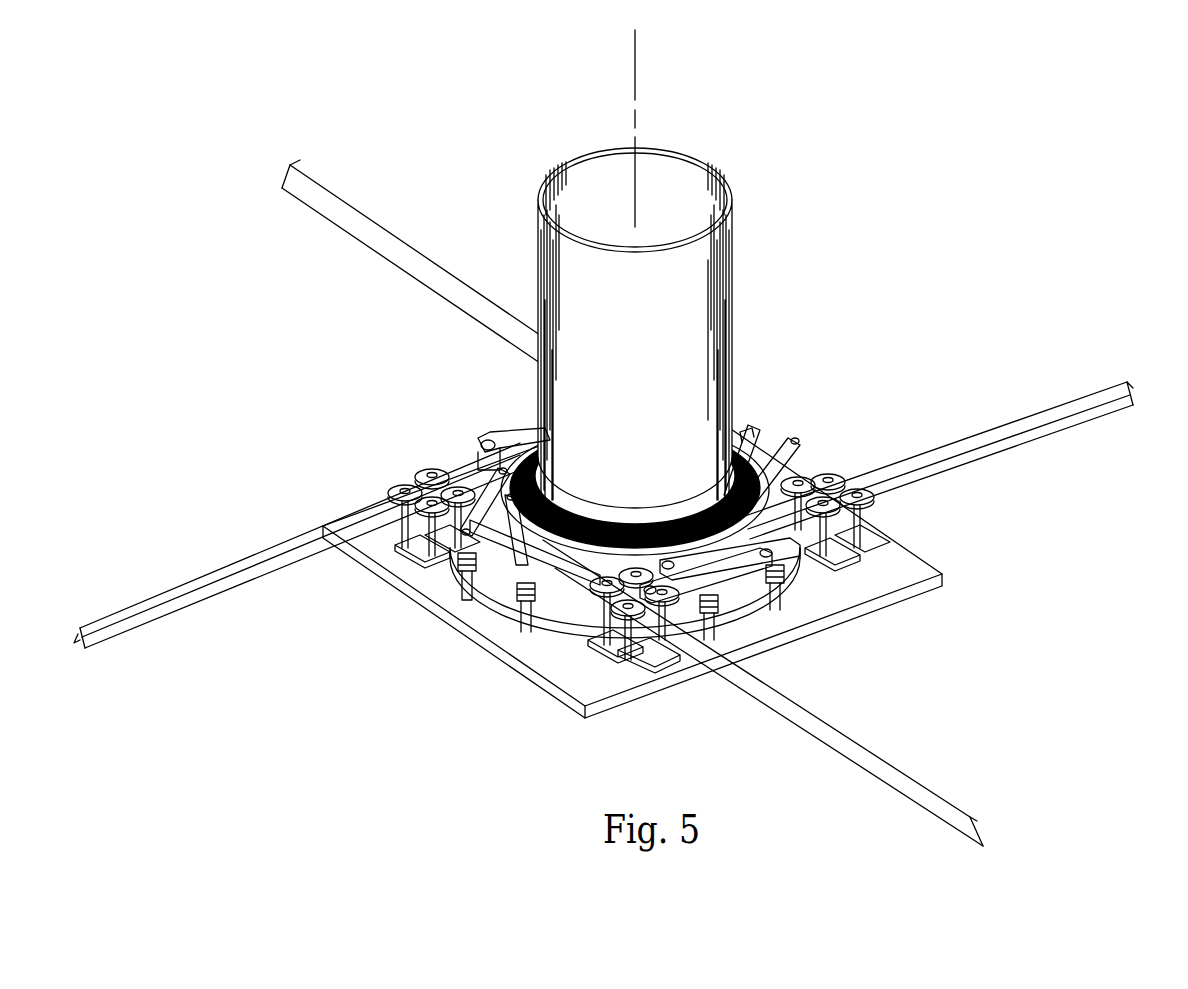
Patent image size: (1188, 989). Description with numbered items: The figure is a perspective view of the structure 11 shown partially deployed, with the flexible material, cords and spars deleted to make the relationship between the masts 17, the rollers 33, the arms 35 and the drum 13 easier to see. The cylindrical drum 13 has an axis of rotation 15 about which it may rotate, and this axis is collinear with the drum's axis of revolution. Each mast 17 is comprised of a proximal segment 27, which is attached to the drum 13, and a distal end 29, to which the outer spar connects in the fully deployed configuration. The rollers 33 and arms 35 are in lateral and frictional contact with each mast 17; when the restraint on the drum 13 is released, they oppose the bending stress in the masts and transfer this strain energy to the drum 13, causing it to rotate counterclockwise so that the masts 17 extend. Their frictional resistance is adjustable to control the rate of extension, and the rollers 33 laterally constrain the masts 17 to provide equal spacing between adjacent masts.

The structure 11 is at (848, 343).
The cylindrical drum 13 is at (568, 163).
The axis of rotation 15 is at (636, 83).
The mast 17 is at (418, 276).
The proximal segment 27 is at (466, 474).
The distal end 29 is at (312, 160).
The roller 33 is at (396, 482).
The arm 35 is at (796, 455).